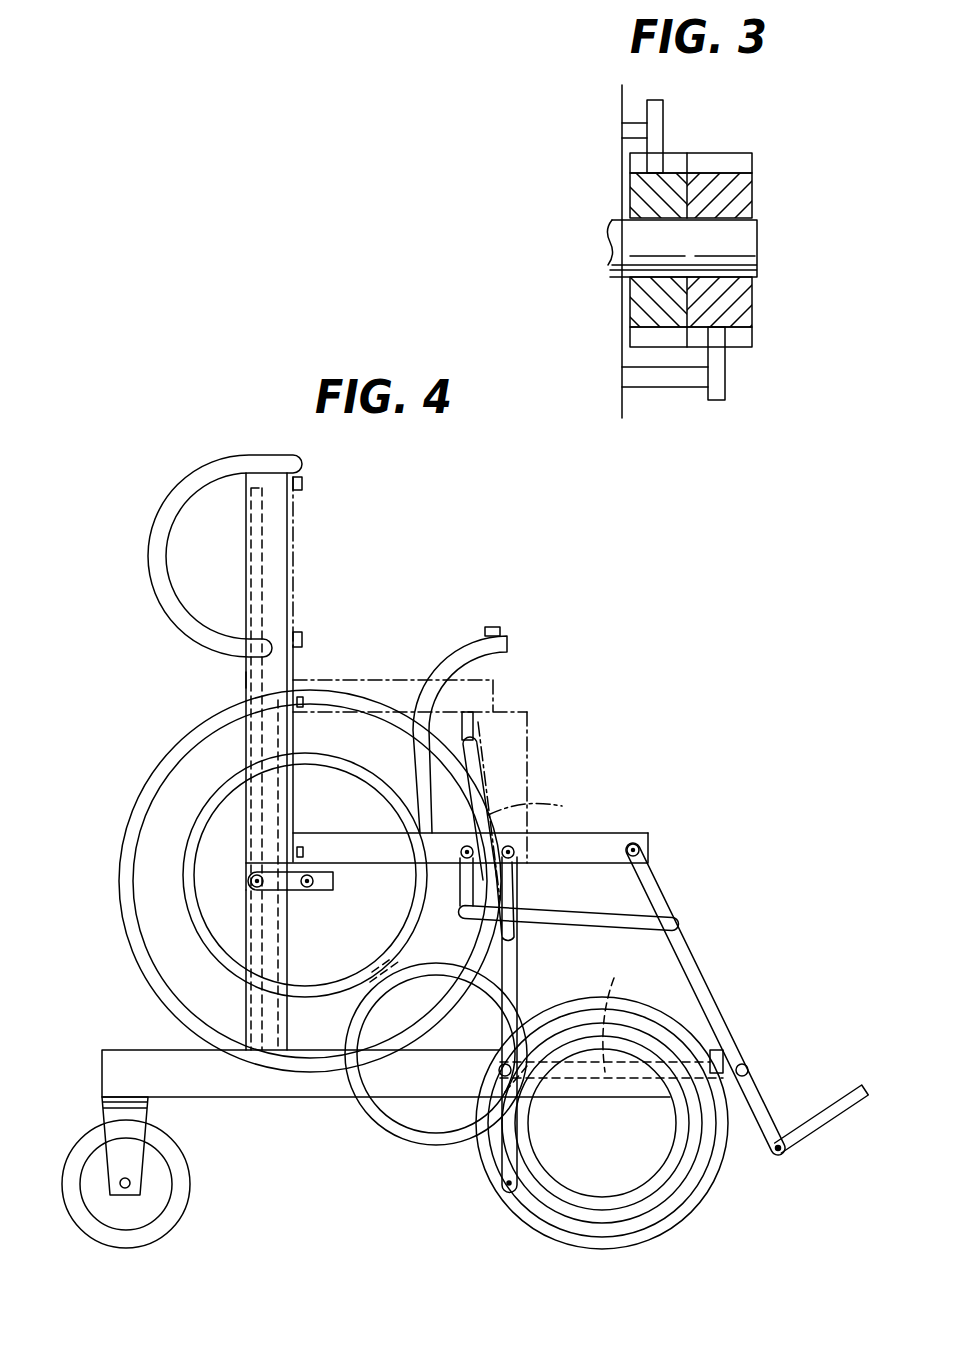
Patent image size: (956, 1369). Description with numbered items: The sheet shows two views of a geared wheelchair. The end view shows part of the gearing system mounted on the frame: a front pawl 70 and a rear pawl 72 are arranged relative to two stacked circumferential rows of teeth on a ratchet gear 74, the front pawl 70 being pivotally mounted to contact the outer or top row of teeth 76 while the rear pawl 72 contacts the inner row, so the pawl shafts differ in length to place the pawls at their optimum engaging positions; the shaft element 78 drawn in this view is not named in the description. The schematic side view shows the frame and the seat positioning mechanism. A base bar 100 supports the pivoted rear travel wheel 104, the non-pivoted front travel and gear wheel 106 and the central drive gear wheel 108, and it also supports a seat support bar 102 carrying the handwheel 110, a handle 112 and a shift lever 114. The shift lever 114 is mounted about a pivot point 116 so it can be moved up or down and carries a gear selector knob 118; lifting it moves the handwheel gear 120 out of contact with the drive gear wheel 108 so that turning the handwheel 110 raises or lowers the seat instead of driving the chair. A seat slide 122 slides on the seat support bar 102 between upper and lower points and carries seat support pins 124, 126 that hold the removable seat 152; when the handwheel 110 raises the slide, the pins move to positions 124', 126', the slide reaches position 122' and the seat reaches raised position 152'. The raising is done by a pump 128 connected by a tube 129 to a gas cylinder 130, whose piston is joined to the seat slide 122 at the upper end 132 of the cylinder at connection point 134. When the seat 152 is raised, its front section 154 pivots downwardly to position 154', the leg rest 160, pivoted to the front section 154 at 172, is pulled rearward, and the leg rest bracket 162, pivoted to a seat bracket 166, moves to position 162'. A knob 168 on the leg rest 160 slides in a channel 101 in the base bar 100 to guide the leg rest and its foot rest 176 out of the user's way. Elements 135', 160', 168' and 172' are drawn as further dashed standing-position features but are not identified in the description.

In FIG. 3, the front pawl 70 is at (725, 362).
In FIG. 3, the rear pawl 72 is at (662, 112).
In FIG. 3, the ratchet gear 74 is at (745, 160).
In FIG. 3, the outer row of teeth 76 is at (705, 150).
In FIG. 3, the shaft 78 is at (748, 245).
In FIG. 4, the base bar 100 is at (255, 1085).
In FIG. 4, the channel 101 is at (614, 978).
In FIG. 4, the seat support bar 102 is at (245, 602).
In FIG. 4, the pivoted rear travel wheel 104 is at (160, 1225).
In FIG. 4, the front travel and gear wheel 106 is at (680, 1215).
In FIG. 4, the central drive gear wheel 108 is at (368, 1116).
In FIG. 4, the handwheel 110 is at (128, 972).
In FIG. 4, the handle 112 is at (172, 495).
In FIG. 4, the shift lever 114 is at (452, 645).
In FIG. 4, the pivot point 116 is at (250, 884).
In FIG. 4, the gear selector knob 118 is at (492, 627).
In FIG. 4, the handwheel gear 120 is at (378, 958).
In FIG. 4, the seat slide 122 is at (305, 866).
In FIG. 4, the raised seat slide position 122' is at (327, 562).
In FIG. 4, the seat support pin 124 is at (345, 887).
In FIG. 4, the raised seat support pin position 124' is at (331, 724).
In FIG. 4, the seat support pin 126 is at (324, 604).
In FIG. 4, the raised seat support pin position 126' is at (334, 465).
In FIG. 4, the pump 128 is at (250, 548).
In FIG. 4, the tube 129 is at (245, 680).
In FIG. 4, the gas cylinder 130 is at (270, 963).
In FIG. 4, the upper end of cylinder 132 is at (240, 750).
In FIG. 4, the connection point 134 is at (240, 727).
In FIG. 4, the backrest strut 135' is at (513, 771).
In FIG. 4, the wheelchair seat 152 is at (470, 809).
In FIG. 4, the raised seat position 152' is at (410, 661).
In FIG. 4, the seat front section 154 is at (463, 824).
In FIG. 4, the pivoted front section position 154' is at (567, 787).
In FIG. 4, the leg rest 160 is at (705, 999).
In FIG. 4, the rear leg in folded position 160' is at (539, 1025).
In FIG. 4, the leg rest bracket 162 is at (569, 898).
In FIG. 4, the raised leg rest bracket position 162' is at (546, 804).
In FIG. 4, the seat bracket 166 is at (463, 883).
In FIG. 4, the knob 168 is at (764, 1043).
In FIG. 4, the pivot in folded position 168' is at (486, 1053).
In FIG. 4, the pivotable connector 172 is at (666, 837).
In FIG. 4, the front seat pivots 172' is at (515, 874).
In FIG. 4, the foot rest 176 is at (838, 1115).